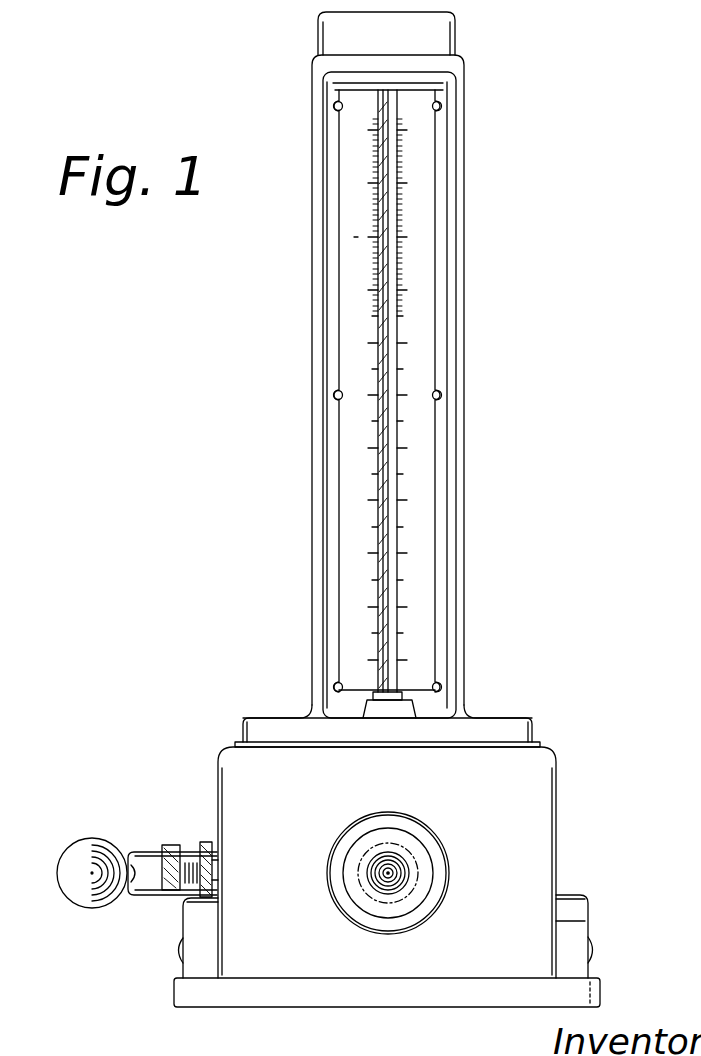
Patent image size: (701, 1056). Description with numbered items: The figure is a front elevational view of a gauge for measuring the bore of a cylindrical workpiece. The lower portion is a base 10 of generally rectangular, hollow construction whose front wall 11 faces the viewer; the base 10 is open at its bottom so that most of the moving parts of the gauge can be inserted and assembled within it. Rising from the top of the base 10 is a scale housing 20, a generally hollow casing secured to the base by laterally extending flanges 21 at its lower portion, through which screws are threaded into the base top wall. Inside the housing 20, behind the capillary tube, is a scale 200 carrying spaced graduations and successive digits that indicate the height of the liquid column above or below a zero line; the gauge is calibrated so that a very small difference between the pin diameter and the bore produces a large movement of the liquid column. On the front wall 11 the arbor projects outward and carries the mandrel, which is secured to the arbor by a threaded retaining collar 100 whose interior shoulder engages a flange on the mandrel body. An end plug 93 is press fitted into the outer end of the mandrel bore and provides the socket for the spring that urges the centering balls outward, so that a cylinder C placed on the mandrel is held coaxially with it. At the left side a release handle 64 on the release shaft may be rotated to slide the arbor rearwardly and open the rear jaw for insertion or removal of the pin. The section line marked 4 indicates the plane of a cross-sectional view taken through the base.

The base 10 is at (400, 877).
The front wall 11 is at (242, 780).
The scale housing 20 is at (540, 473).
The laterally extending flanges 21 is at (508, 730).
The scale 200 is at (352, 458).
The retaining collar 100 is at (366, 830).
The end plug 93 is at (378, 888).
The release handle 64 is at (90, 886).
The cylinder C is at (358, 866).
The section line 4- 4 is at (307, 12).